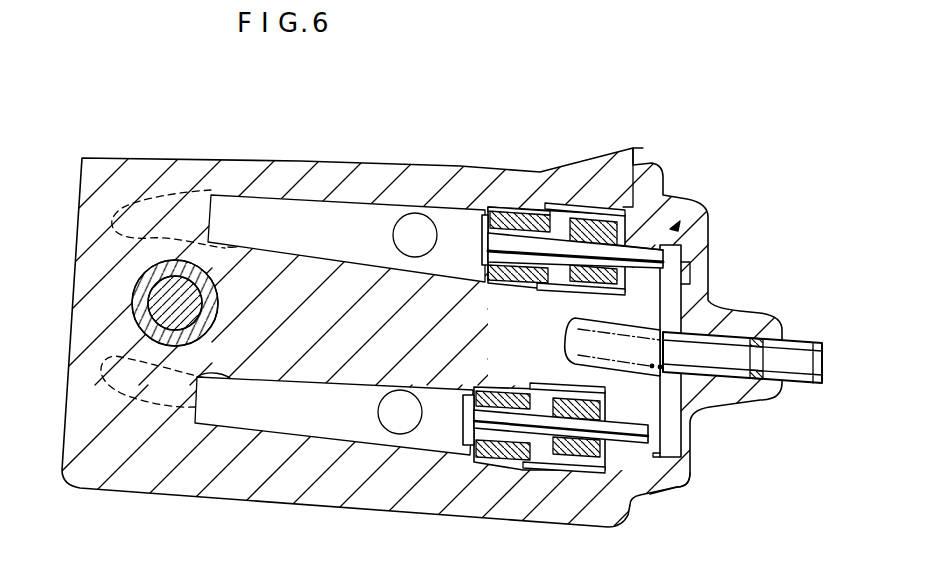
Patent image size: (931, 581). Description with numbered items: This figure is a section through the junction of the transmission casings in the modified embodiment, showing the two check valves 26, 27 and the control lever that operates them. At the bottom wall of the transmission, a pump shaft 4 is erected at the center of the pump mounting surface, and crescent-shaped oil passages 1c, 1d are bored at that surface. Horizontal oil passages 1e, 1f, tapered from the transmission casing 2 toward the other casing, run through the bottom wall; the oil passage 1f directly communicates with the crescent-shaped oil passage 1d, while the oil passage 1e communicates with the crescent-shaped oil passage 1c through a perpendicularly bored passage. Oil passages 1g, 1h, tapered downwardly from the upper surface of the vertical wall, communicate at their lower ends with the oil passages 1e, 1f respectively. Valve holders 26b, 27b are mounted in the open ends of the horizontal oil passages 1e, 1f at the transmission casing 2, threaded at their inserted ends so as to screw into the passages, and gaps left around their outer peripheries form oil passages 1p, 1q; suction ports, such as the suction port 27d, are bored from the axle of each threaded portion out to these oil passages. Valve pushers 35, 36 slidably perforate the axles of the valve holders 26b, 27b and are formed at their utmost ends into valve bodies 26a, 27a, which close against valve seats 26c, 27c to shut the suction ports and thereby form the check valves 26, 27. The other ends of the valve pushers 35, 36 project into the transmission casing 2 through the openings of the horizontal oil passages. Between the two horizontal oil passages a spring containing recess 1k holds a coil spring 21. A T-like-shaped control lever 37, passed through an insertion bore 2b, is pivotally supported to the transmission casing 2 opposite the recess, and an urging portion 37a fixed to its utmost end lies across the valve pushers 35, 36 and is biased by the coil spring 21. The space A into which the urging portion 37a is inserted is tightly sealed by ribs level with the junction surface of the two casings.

The transmission casing 2 is at (743, 407).
The insertion bore 2b is at (745, 336).
The pump shaft 4 is at (172, 306).
The crescent-shaped oil passage 1c is at (208, 397).
The crescent-shaped oil passage 1d is at (215, 200).
The horizontal oil passage 1e is at (257, 428).
The horizontal oil passage 1f is at (263, 205).
The oil passage 1g is at (378, 412).
The oil passage 1h is at (394, 234).
The spring containing recess 1k is at (612, 368).
The oil passage 1p is at (578, 474).
The oil passage 1q is at (578, 212).
The coil spring 21 is at (650, 325).
The check valve 26 is at (558, 453).
The valve body 26a is at (462, 436).
The valve holder 26b is at (487, 458).
The valve seat 26c is at (475, 385).
The check valve 27 is at (550, 189).
The valve body 27a is at (481, 238).
The valve holder 27b is at (523, 228).
The valve seat 27c is at (492, 215).
The suction port 27d is at (547, 206).
The valve pusher 35 is at (680, 483).
The valve pusher 36 is at (663, 247).
The control lever 37 is at (756, 326).
The urging portion 37a is at (682, 273).
The space A is at (674, 225).